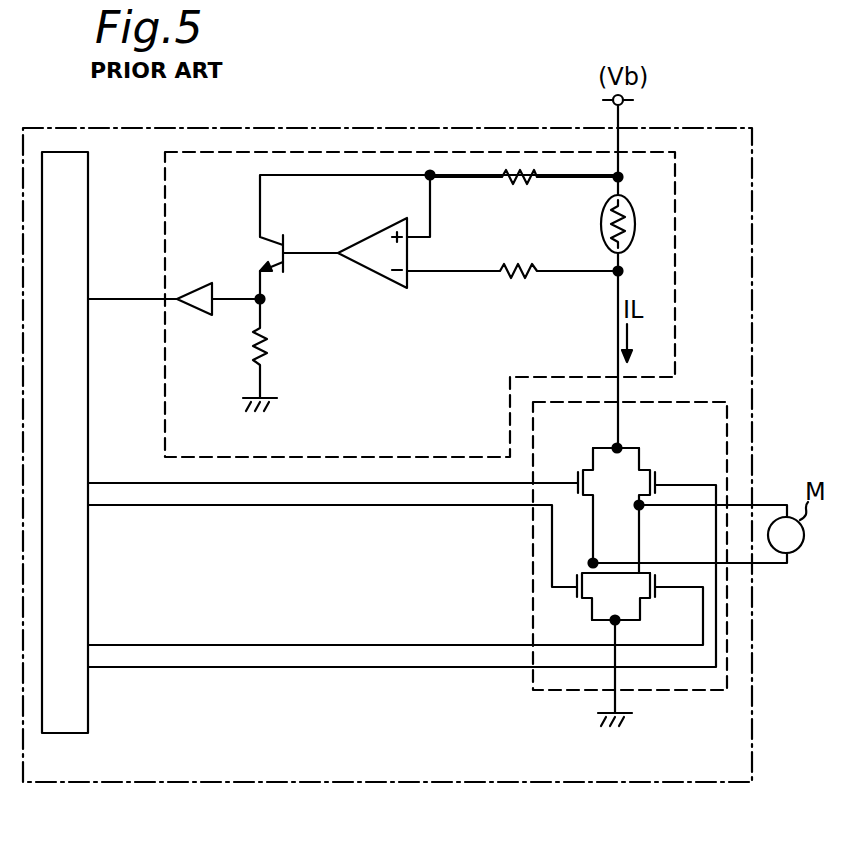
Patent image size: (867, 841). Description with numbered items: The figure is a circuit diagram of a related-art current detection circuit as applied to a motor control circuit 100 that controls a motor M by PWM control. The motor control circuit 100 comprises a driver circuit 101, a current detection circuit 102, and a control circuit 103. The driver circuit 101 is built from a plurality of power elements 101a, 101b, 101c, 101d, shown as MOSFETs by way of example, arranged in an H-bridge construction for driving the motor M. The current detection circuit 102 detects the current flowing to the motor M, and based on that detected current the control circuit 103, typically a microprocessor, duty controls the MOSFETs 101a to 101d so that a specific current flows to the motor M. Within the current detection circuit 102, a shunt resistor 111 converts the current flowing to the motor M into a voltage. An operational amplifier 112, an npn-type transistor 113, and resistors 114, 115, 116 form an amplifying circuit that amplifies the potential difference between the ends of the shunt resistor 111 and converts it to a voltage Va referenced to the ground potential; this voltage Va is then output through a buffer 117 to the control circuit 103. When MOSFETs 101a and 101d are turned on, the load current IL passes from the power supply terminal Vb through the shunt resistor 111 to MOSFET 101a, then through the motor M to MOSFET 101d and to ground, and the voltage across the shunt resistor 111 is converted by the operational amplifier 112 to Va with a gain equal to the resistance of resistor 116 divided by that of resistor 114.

The motor control circuit 100 is at (449, 127).
The driver circuit 101 is at (533, 607).
The MOSFET 101a is at (578, 470).
The MOSFET 101b is at (658, 470).
The MOSFET 101c is at (572, 596).
The MOSFET 101d is at (657, 597).
The current detection circuit 102 is at (677, 201).
The control circuit 103 is at (89, 190).
The shunt resistor 111 is at (600, 226).
The operational amplifier 112 is at (360, 268).
The npn-type transistor 113 is at (283, 240).
The resistor 114 is at (512, 186).
The resistor 115 is at (525, 280).
The resistor 116 is at (250, 347).
The buffer 117 is at (190, 280).